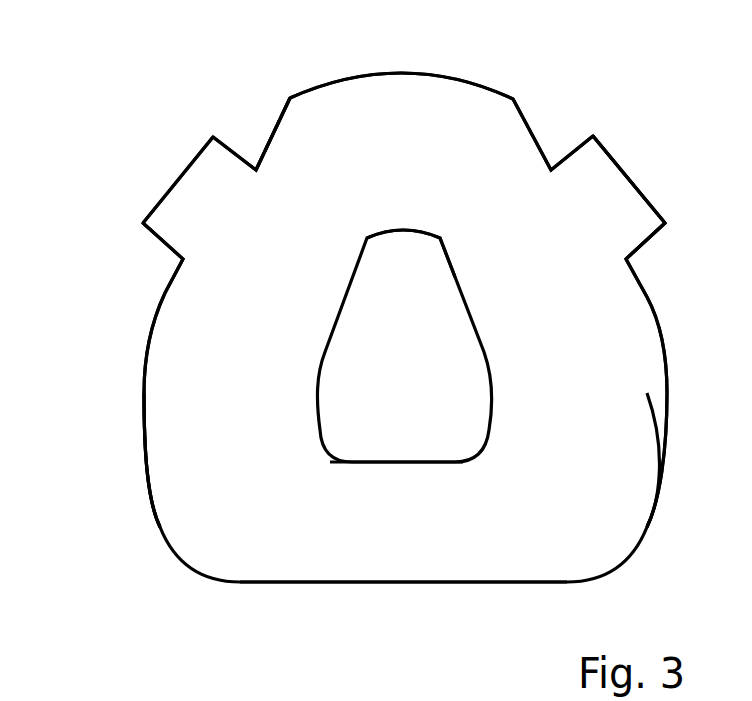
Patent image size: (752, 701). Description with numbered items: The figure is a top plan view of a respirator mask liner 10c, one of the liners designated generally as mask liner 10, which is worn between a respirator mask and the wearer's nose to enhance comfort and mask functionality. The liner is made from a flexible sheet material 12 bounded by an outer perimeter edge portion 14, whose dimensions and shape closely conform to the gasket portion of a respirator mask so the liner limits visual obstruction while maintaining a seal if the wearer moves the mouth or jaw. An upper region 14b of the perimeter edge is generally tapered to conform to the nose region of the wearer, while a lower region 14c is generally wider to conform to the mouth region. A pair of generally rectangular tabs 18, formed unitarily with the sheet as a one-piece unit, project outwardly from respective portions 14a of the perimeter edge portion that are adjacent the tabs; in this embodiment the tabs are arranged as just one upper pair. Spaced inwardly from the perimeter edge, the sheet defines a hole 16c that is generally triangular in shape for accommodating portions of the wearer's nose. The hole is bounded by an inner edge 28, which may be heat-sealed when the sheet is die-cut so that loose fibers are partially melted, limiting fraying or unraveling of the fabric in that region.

The mask liner 10 is at (689, 55).
The mask liner 10c is at (699, 154).
The flexible sheet material 12 is at (647, 372).
The outer perimeter edge portion 14 is at (276, 108).
The portions of the perimeter edge portion 14a is at (255, 150).
The upper region of perimeter edge portion 14b is at (511, 77).
The lower region of perimeter edge portion 14c is at (95, 489).
The hole 16c is at (457, 336).
The tabs 18 is at (177, 173).
The inner edge 28 is at (442, 254).